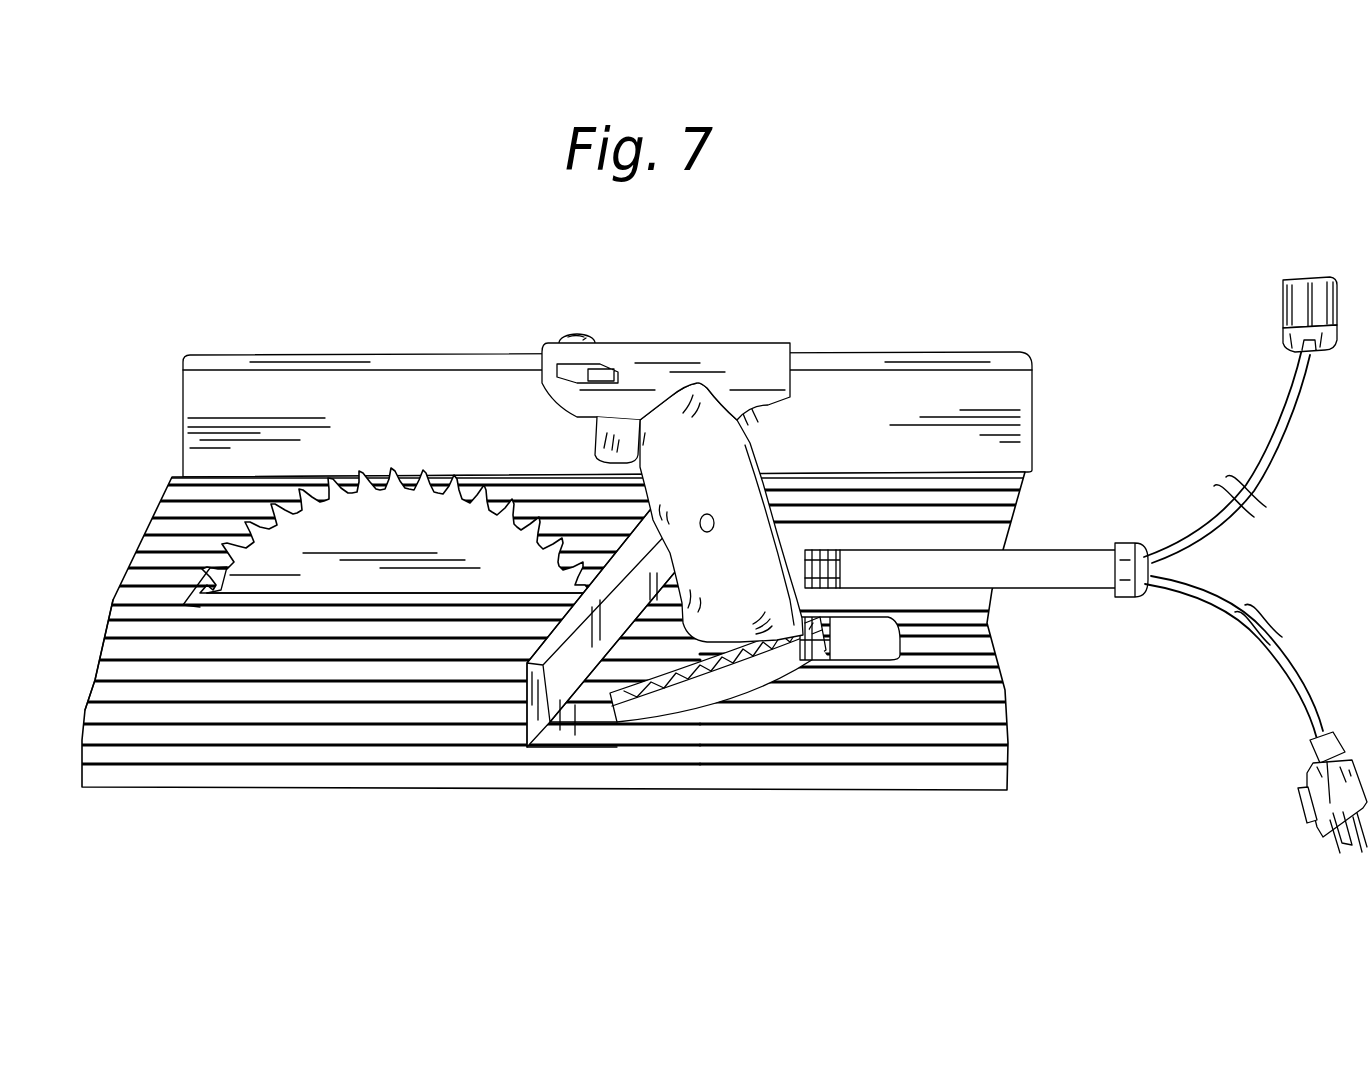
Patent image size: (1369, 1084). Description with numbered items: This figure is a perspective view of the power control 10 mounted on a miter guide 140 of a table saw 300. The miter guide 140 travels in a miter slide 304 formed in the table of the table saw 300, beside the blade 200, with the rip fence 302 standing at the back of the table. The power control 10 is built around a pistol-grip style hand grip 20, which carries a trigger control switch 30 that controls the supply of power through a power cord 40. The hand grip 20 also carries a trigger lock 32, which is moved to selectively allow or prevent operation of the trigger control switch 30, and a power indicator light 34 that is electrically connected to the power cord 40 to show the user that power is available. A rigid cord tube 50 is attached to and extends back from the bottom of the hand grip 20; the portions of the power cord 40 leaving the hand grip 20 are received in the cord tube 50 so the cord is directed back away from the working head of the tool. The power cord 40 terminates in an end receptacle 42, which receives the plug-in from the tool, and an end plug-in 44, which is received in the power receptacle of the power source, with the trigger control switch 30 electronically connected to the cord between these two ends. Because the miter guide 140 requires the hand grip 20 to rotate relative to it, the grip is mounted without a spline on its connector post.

The power control 10 is at (1037, 266).
The hand grip 20 is at (678, 490).
The trigger control switch 30 is at (595, 432).
The trigger lock 32 is at (616, 366).
The power indicator light 34 is at (590, 334).
The power cord 40 is at (1287, 480).
The end receptacle 42 is at (1298, 262).
The end plug-in 44 is at (1306, 803).
The cord tube 50 is at (1030, 555).
The miter guide 140 is at (598, 714).
The blade 200 is at (372, 538).
The table saw 300 is at (946, 762).
The rip fence 302 is at (318, 383).
The miter slide 304 is at (122, 614).